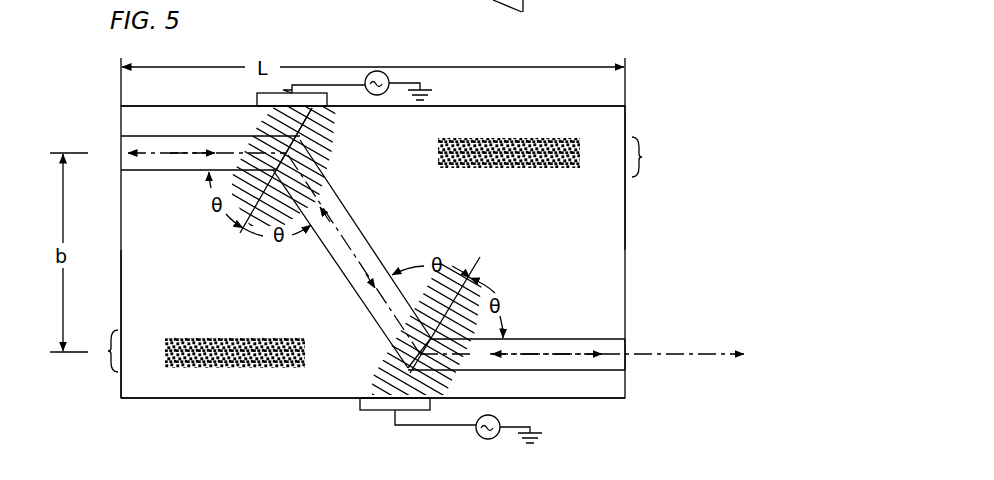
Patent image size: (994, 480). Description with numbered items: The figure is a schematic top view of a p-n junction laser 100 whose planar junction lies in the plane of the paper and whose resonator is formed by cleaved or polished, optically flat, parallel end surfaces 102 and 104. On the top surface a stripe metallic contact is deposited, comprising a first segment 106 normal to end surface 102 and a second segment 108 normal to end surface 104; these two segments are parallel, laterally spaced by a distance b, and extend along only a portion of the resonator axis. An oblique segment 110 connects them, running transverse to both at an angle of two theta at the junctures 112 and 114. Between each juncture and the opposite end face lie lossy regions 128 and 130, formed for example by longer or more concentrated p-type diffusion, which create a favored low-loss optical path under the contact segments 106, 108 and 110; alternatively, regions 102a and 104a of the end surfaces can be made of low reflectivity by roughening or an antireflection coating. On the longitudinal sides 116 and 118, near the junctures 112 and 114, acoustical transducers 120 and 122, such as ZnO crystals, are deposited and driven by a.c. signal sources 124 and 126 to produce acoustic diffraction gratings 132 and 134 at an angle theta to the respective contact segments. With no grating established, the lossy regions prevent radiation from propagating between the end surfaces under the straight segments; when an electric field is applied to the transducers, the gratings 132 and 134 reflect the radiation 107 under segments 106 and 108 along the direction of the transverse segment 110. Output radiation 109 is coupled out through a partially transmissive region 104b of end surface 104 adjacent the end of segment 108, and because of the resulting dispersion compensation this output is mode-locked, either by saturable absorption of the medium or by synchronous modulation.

The p-n junction laser 100 is at (618, 122).
The end surface 102 is at (120, 387).
The low-reflectivity region of end surface 102a is at (108, 357).
The end surface 104 is at (627, 223).
The low-reflectivity region of end surface 104a is at (664, 157).
The partially transmissive region 104b is at (627, 343).
The first contact segment 106 is at (172, 136).
The radiation 107 is at (174, 154).
The second contact segment 108 is at (545, 340).
The output radiation 109 is at (677, 357).
The oblique contact segment 110 is at (350, 218).
The juncture 112 is at (297, 135).
The juncture 114 is at (383, 356).
The longitudinal side 116 is at (147, 105).
The longitudinal side 118 is at (190, 400).
The acoustical transducer 120 is at (265, 93).
The acoustical transducer 122 is at (366, 410).
The a.c. signal source 124 is at (498, 418).
The a.c. signal source 126 is at (390, 80).
The lossy region 128 is at (515, 168).
The lossy region 130 is at (250, 350).
The acoustic diffraction grating 132 is at (297, 168).
The acoustic diffraction grating 134 is at (468, 282).